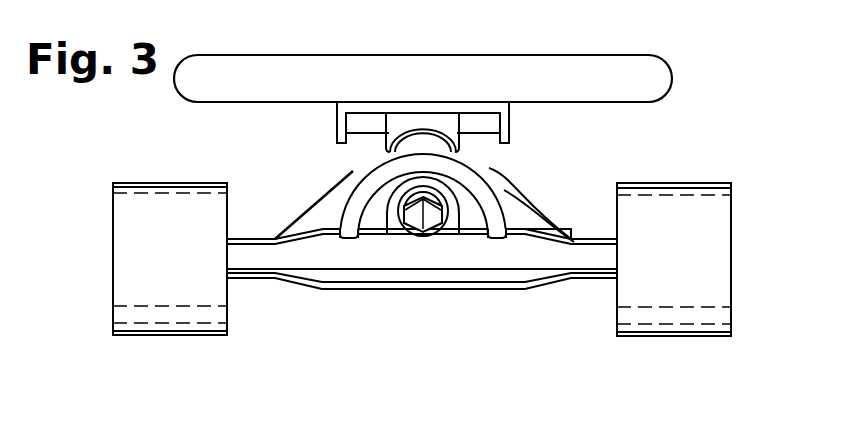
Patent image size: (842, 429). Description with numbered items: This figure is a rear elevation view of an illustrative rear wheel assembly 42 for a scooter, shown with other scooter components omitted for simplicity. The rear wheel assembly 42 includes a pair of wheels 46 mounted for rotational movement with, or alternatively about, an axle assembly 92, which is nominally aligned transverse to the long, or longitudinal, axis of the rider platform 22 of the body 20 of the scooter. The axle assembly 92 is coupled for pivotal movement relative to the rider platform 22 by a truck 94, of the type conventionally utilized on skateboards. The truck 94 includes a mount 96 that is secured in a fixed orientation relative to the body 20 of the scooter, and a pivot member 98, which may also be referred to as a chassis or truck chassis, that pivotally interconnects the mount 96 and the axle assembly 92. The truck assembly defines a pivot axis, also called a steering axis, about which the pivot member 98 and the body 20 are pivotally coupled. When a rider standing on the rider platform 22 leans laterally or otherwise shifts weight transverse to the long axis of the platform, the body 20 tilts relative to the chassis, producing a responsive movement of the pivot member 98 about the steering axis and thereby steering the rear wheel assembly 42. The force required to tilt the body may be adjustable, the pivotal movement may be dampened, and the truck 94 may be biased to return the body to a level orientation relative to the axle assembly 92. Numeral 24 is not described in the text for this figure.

The body 20 is at (648, 24).
The rider platform 22 is at (568, 51).
The top surface of deck 24 is at (427, 55).
The rear wheel assembly 42 is at (752, 280).
The wheels 46 is at (158, 183).
The axle assembly 92 is at (598, 282).
The truck 94 is at (526, 158).
The mount 96 is at (336, 119).
The pivot member 98 is at (504, 176).